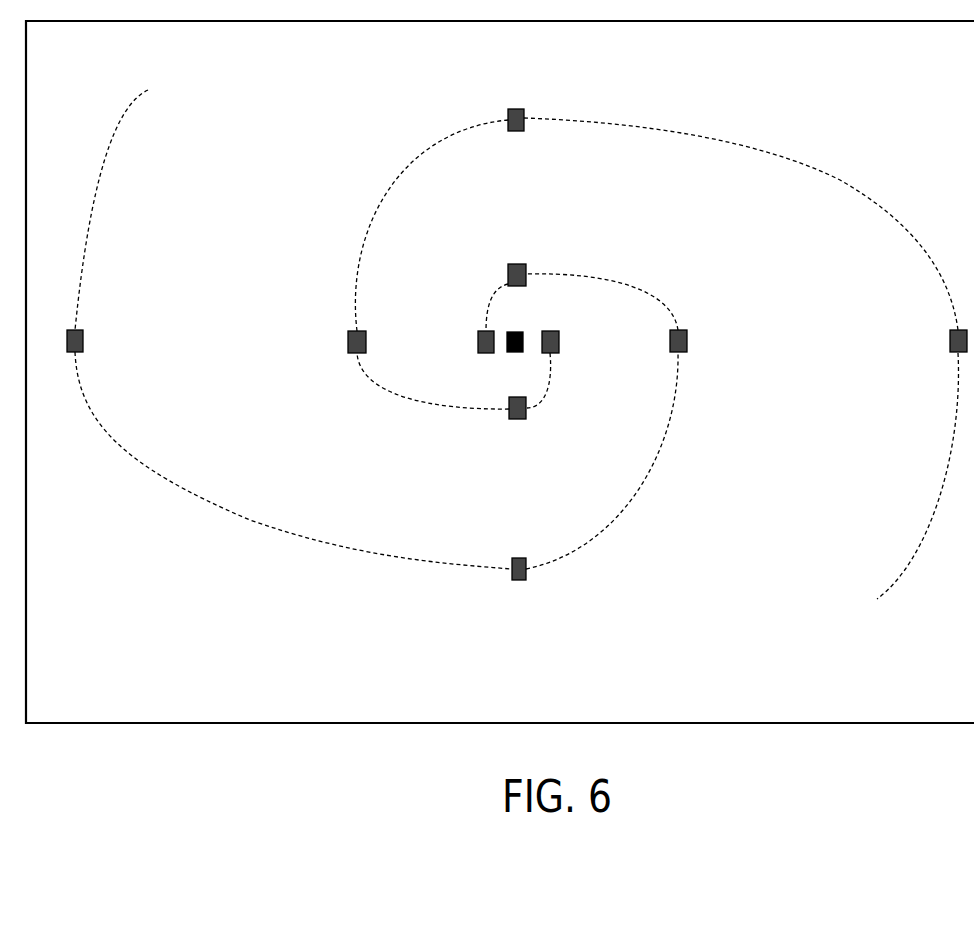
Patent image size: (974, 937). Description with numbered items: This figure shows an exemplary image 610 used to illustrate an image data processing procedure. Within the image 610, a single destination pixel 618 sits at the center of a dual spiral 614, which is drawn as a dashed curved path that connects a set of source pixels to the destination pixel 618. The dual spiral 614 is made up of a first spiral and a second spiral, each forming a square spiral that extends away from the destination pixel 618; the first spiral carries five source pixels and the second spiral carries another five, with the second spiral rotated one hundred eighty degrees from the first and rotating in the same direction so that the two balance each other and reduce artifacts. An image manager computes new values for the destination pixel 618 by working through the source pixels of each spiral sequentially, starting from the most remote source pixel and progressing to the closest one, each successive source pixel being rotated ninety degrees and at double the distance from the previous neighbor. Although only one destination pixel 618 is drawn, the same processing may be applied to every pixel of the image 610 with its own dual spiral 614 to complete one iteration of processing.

The image 610 is at (157, 780).
The dual spiral 614 is at (730, 601).
The destination pixel 618 is at (525, 332).